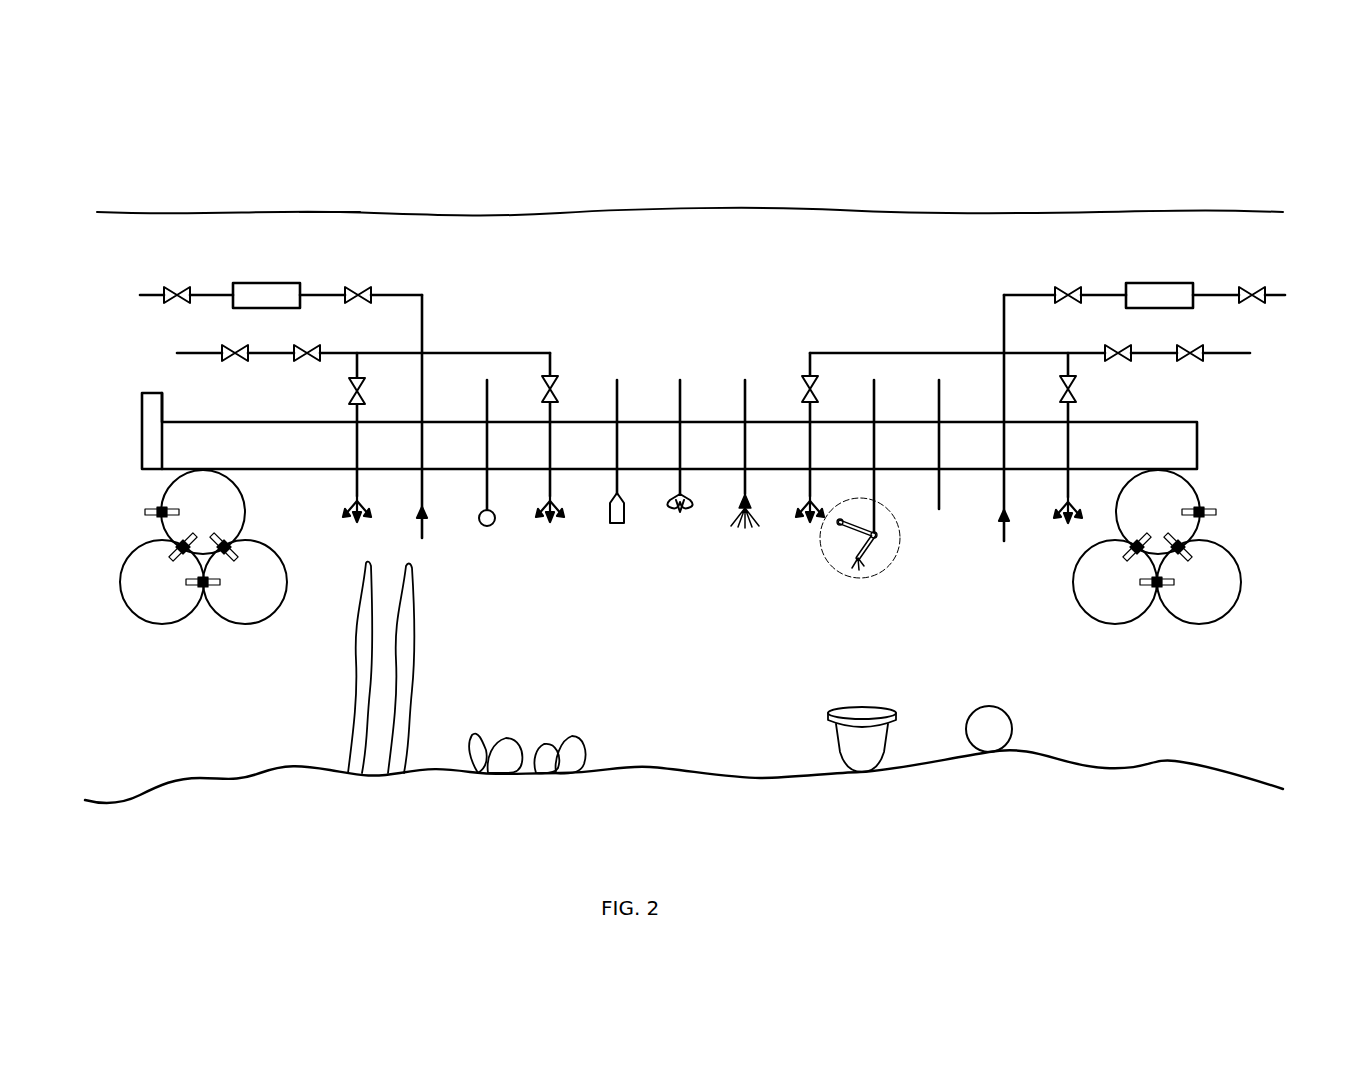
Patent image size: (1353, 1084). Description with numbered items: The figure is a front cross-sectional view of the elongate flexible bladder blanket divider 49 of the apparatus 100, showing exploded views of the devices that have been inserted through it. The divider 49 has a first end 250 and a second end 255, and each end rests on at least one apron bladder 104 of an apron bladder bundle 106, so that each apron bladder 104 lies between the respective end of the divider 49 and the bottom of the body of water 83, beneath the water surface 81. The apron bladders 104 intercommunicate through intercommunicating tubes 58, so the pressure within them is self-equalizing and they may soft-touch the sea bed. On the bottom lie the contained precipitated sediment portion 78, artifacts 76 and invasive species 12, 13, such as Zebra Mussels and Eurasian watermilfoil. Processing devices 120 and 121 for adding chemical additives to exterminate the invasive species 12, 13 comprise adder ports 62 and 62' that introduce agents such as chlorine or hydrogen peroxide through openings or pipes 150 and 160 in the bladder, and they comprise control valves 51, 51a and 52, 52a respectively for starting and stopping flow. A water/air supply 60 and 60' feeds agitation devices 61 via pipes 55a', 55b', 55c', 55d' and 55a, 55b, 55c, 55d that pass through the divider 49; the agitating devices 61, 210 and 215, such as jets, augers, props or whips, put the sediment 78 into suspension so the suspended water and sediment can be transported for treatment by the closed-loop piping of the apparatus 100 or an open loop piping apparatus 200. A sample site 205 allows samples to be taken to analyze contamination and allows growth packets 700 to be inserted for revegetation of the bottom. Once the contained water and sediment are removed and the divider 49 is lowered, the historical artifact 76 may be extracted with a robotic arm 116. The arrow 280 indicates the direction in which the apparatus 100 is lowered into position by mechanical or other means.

The invasive species 12 is at (510, 735).
The invasive species 13 is at (388, 780).
The elongate flexible bladder blanket divider 49 is at (650, 390).
The control valve 51 is at (170, 288).
The control valve 51a is at (358, 290).
The control valve 52 is at (1253, 288).
The control valve 52a is at (1067, 288).
The pipe 55a is at (1193, 367).
The pipe 55b is at (998, 367).
The pipe 55c is at (1097, 438).
The valve 55d is at (793, 434).
The pipe 55a' is at (230, 369).
The pipe 55b' is at (394, 371).
The pipe 55c' is at (382, 437).
The valve 55d' is at (578, 421).
The intercommunicating tubes 58 is at (224, 530).
The water/air supply 60 is at (1241, 354).
The water/air supply 60' is at (182, 354).
The agitating devices 61 is at (345, 555).
The adder port 62 is at (135, 296).
The adder port 62' is at (1294, 296).
The artifact 76 is at (862, 774).
The contained precipitated sediment portion 78 is at (700, 766).
The water surface 81 is at (332, 211).
The body of water 83 is at (240, 198).
The apparatus 100 is at (510, 275).
The apron bladder 104 is at (140, 556).
The apron bladder bundle 106 is at (138, 478).
The robotic arm 116 is at (880, 515).
The processing device 120 is at (286, 284).
The processing device 121 is at (1164, 284).
The pipe 150 is at (424, 448).
The pipe 160 is at (1000, 488).
The open loop piping apparatus 200 is at (494, 524).
The sample site 205 is at (617, 525).
The agitating device 210 is at (682, 514).
The agitating device 215 is at (750, 495).
The first end 250 is at (246, 457).
The second end 255 is at (1180, 457).
The arrow 280 is at (1268, 580).
The growth packets 700 is at (992, 706).